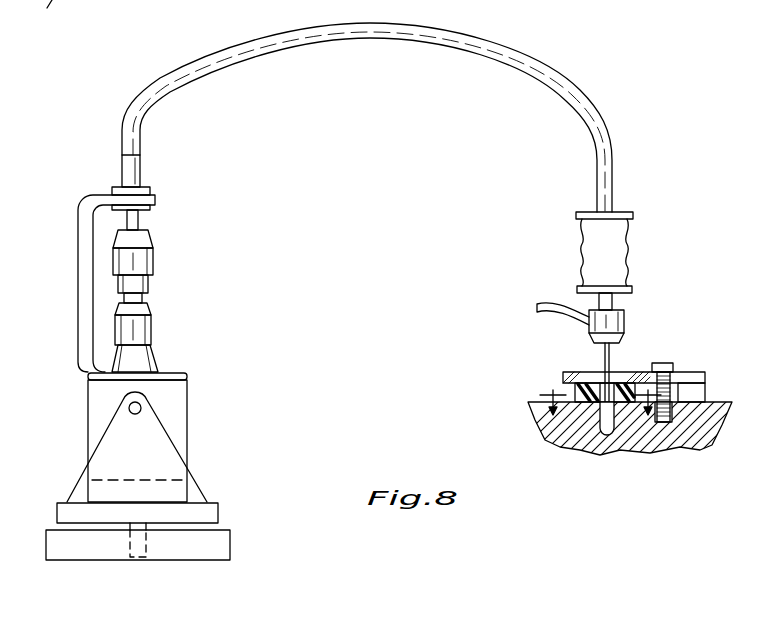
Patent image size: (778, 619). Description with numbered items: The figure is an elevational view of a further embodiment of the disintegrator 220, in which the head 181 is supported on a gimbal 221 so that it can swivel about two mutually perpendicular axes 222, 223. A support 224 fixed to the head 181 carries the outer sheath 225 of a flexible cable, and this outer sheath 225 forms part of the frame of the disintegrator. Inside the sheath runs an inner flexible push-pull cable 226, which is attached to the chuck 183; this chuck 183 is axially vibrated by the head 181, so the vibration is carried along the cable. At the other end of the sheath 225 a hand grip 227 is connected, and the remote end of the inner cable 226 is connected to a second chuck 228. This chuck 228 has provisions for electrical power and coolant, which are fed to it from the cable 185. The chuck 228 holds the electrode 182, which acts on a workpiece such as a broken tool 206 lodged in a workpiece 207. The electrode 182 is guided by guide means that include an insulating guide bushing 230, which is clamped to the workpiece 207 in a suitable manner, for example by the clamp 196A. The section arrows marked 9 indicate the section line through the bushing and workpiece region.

The disintegrator 220 is at (130, 100).
The outer sheath 225 is at (142, 135).
The support 224 is at (78, 230).
The inner flexible push-pull cable 226 is at (138, 218).
The chuck 183 is at (149, 263).
The head 181 is at (175, 392).
The axis 222 is at (129, 406).
The gimbal 221 is at (170, 456).
The axis 223 is at (130, 523).
The hand grip 227 is at (613, 230).
The chuck 228 is at (589, 333).
The cable 185 is at (542, 320).
The electrode 182 is at (610, 358).
The clamp 196A is at (682, 372).
The insulating guide bushing 230 is at (577, 385).
The broken tool 206 is at (612, 433).
The workpiece 207 is at (627, 445).
The section line 9- 9 is at (600, 415).